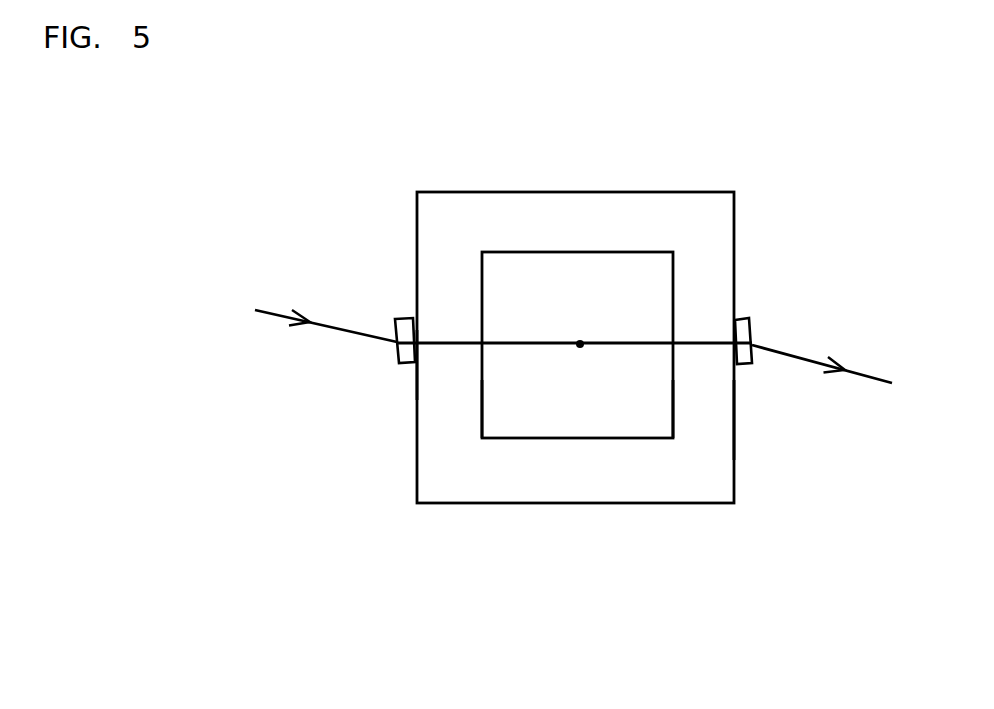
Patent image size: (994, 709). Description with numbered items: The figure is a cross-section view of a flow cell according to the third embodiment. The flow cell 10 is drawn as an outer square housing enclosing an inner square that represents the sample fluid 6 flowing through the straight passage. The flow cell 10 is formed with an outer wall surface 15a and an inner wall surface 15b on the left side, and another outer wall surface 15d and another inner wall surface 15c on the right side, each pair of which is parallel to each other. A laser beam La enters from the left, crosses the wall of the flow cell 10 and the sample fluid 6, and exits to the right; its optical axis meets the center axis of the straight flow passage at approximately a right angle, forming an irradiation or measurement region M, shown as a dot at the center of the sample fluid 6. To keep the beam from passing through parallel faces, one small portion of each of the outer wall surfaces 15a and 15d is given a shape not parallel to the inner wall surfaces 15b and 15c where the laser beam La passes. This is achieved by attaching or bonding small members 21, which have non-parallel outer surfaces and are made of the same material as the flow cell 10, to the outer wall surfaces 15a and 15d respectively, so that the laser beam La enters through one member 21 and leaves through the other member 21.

The flow cell 10 is at (572, 207).
The sample fluid 6 is at (652, 305).
The member 21 is at (407, 327).
The laser beam La is at (275, 308).
The measurement region M is at (580, 348).
The outer wall surface 15a is at (412, 368).
The inner wall surface 15b is at (482, 397).
The inner wall surface 15c is at (673, 397).
The outer wall surface 15d is at (735, 418).